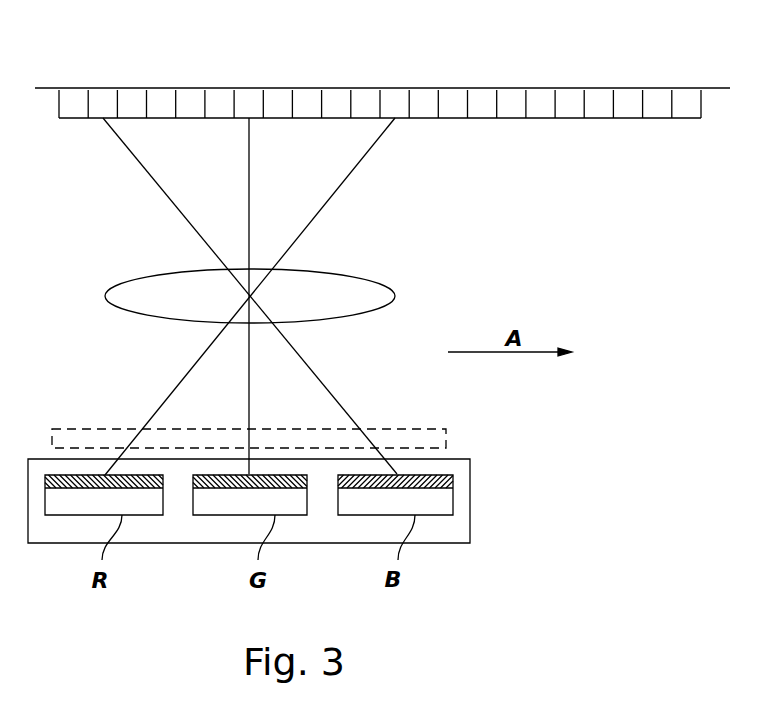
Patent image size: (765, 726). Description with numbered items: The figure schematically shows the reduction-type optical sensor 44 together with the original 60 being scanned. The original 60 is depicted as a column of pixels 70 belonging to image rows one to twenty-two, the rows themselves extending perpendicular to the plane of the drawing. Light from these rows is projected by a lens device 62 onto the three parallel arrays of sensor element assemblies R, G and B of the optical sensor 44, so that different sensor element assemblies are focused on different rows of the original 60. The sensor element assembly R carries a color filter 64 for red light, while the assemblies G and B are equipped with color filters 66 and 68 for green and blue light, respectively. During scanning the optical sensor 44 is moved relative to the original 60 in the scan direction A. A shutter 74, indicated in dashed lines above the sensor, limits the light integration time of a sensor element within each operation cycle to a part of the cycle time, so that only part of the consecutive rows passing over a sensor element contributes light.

The original 60 is at (50, 88).
The pixels 70 is at (572, 118).
The lens device 62 is at (395, 292).
The shutter 74 is at (445, 434).
The optical sensor 44 is at (492, 456).
The color filter for red light 64 is at (78, 475).
The color filter for green light 66 is at (235, 475).
The color filter for blue light 68 is at (425, 474).